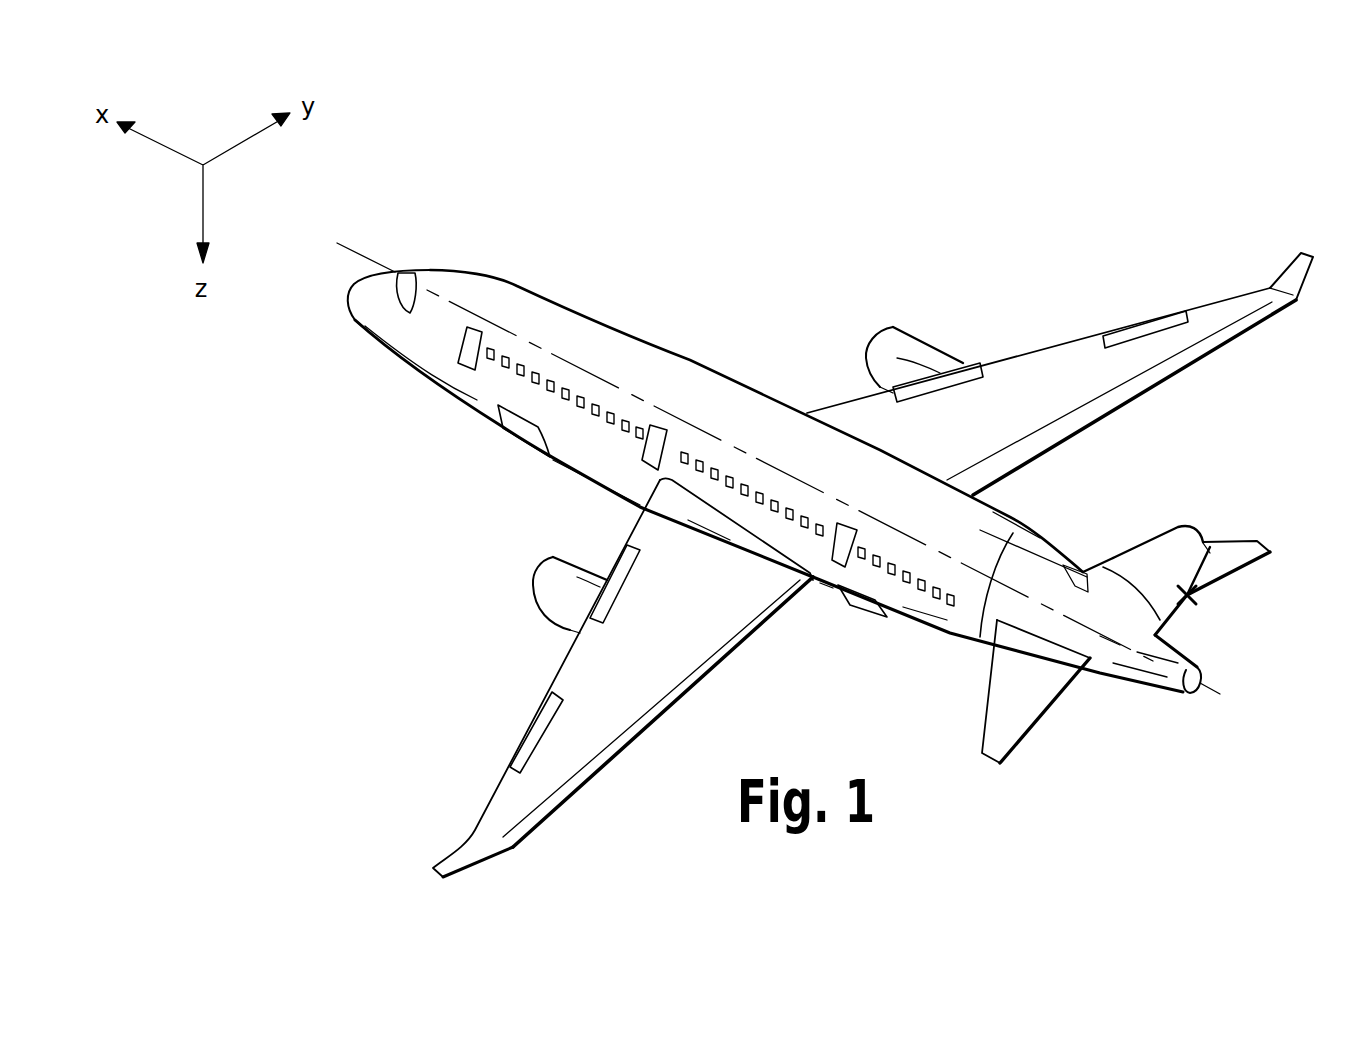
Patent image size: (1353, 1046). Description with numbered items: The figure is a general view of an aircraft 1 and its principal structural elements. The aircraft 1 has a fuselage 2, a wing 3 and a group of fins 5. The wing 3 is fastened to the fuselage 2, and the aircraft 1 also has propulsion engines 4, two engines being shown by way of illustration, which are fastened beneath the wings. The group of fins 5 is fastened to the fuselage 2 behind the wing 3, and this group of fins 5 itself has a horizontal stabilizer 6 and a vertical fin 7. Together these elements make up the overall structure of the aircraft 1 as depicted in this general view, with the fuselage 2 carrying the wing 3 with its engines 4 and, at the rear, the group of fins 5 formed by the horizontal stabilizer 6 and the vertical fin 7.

The aircraft 1 is at (545, 212).
The fuselage 2 is at (627, 347).
The wing 3 is at (1045, 367).
The propulsion engines 4 is at (897, 347).
The group of fins 5 is at (1220, 508).
The horizontal stabilizer 6 is at (1030, 697).
The vertical fin 7 is at (1187, 598).